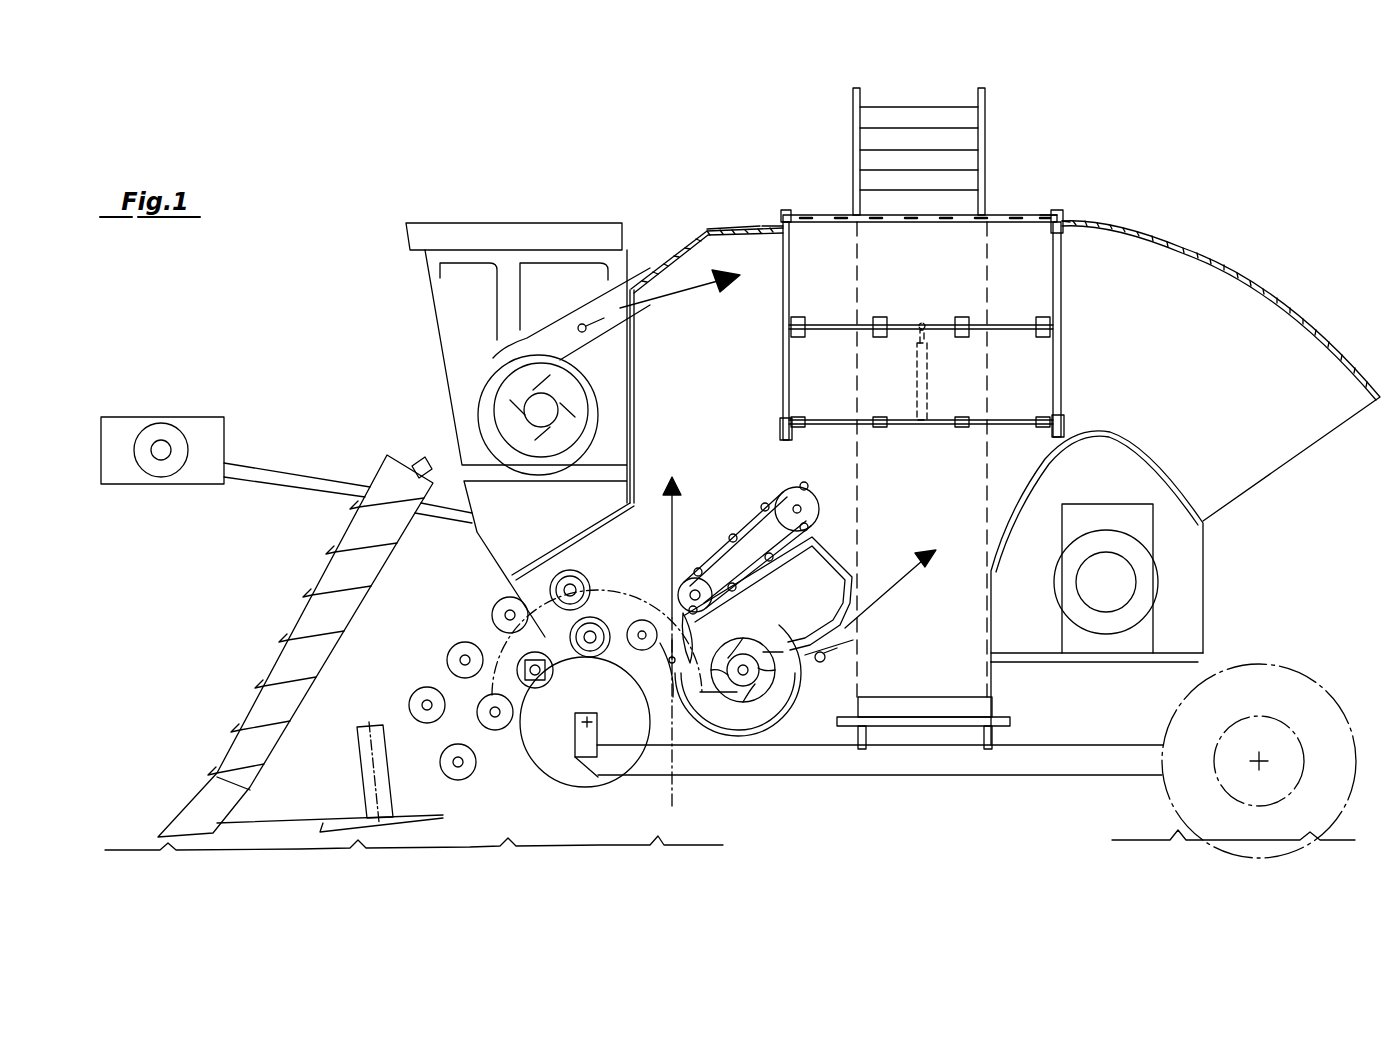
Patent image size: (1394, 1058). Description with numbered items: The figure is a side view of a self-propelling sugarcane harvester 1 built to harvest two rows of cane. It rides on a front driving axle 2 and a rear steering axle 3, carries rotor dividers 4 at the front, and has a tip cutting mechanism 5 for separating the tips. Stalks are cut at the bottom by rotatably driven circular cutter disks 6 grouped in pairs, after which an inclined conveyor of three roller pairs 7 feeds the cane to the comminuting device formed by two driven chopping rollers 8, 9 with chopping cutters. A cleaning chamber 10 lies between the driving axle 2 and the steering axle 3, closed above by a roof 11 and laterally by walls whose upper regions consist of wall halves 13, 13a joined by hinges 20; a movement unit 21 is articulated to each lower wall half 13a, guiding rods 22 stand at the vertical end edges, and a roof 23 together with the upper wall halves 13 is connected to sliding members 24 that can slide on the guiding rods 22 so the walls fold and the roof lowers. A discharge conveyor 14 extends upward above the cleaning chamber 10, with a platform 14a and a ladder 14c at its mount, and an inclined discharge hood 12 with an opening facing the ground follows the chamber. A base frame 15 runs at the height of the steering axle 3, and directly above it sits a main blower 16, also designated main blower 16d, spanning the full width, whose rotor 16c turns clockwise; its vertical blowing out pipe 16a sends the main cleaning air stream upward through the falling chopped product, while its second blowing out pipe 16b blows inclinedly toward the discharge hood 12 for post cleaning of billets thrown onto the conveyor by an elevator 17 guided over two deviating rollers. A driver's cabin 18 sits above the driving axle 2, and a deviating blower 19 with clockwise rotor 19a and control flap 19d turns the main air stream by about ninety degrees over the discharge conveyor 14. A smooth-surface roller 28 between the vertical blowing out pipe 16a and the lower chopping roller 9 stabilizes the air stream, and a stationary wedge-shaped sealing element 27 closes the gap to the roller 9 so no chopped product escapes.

The sugarcane harvester 1 is at (440, 217).
The front driving axle 2 is at (590, 735).
The rear steering axle 3 is at (1259, 761).
The rotor dividers 4 is at (265, 712).
The tip cutting mechanism 5 is at (123, 412).
The circular cutter disks 6 is at (335, 826).
The roller pairs 7 is at (496, 605).
The chopping roller 8 is at (556, 576).
The chopping roller 9 is at (588, 645).
The cleaning chamber 10 is at (720, 392).
The roof 11 is at (750, 223).
The discharge hood 12 is at (1262, 410).
The upper wall half 13 is at (1005, 247).
The lower wall half 13a is at (1037, 385).
The discharge conveyor 14 is at (851, 279).
The platform 14a is at (962, 722).
The ladder 14c is at (957, 138).
The base frame 15 is at (1092, 749).
The main blower 16 is at (758, 730).
The vertical blowing out pipe 16a is at (661, 654).
The second blowing out pipe 16b is at (817, 678).
The rotor 16c is at (737, 683).
The main blower 16d is at (822, 661).
The elevator 17 is at (748, 528).
The driver's cabin 18 is at (466, 294).
The deviating blower 19 is at (524, 372).
The rotor 19a is at (537, 403).
The control flap 19d is at (598, 318).
The hinges 20 is at (962, 325).
The movement unit 21 is at (915, 416).
The guiding rods 22 is at (783, 270).
The roof 23 is at (1022, 213).
The sliding members 24 is at (768, 222).
The wedge-shaped sealing element 27 is at (619, 634).
The smooth-surface roller 28 is at (640, 628).